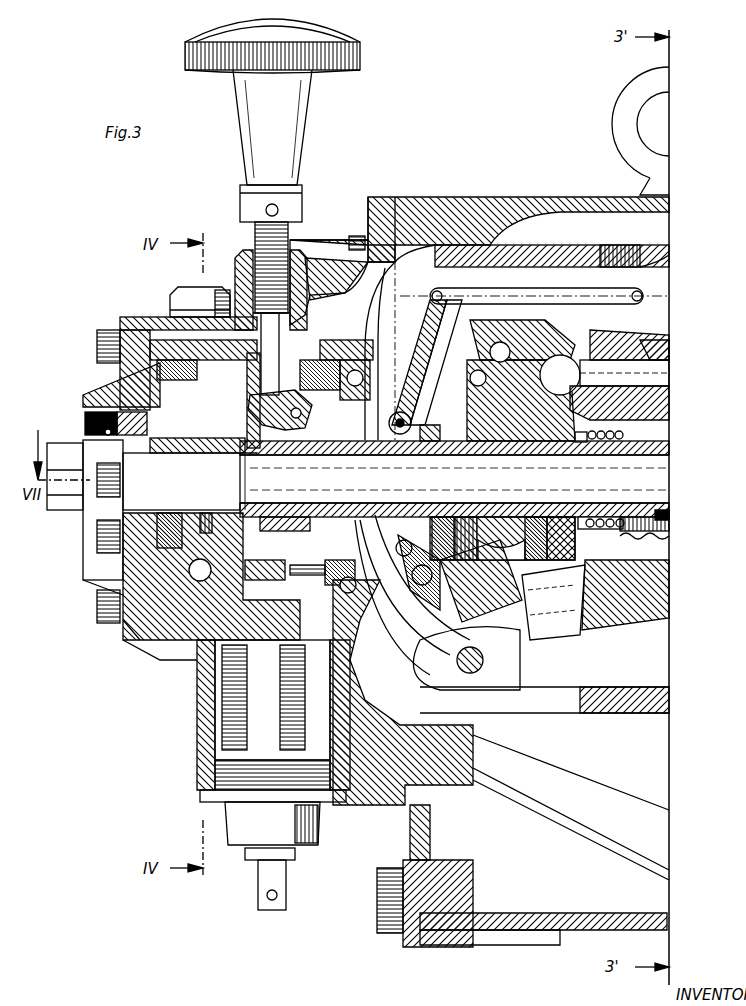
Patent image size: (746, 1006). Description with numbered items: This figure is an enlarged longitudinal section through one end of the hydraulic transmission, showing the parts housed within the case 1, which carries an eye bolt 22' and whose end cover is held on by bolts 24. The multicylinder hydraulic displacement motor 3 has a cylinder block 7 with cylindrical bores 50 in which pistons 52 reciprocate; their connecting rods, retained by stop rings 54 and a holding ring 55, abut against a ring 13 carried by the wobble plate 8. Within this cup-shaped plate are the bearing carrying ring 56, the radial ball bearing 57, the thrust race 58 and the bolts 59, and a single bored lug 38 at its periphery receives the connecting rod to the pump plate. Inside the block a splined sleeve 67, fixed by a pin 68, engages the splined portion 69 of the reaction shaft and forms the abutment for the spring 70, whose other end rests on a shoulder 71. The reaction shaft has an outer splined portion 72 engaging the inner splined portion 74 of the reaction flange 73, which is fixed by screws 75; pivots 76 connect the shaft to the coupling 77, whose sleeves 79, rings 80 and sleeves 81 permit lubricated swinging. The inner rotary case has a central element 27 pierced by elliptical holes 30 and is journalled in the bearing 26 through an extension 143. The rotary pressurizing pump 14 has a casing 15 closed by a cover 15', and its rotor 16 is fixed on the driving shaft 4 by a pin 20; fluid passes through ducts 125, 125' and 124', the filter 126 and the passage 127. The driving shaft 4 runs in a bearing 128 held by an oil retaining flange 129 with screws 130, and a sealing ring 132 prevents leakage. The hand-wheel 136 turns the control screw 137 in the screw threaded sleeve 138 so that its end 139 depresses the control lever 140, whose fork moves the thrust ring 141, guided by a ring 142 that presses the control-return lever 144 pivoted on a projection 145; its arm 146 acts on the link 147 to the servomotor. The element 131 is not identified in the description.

The case 1 is at (472, 196).
The multicylinder hydraulic displacement motor 3 is at (613, 360).
The driving shaft 4 is at (188, 491).
The cylinder block 7 is at (645, 618).
The wobble plate 8 is at (425, 610).
The ring 13 is at (459, 578).
The rotary pressurizing pump 14 is at (123, 620).
The casing 15 is at (181, 715).
The cover 15' is at (110, 385).
The rotor 16 is at (262, 503).
The pin 20 is at (212, 513).
The eye bolt 22' is at (626, 131).
The bolts 24 is at (350, 236).
The bearing 26 is at (352, 360).
The central element 27 is at (530, 245).
The elliptical holes 30 is at (622, 245).
The bored lug 38 is at (385, 690).
The cylindrical bores 50 is at (632, 350).
The pistons 52 is at (655, 400).
The stop rings 54 is at (665, 340).
The holding ring 55 is at (568, 360).
The bearing carrying ring 56 is at (515, 370).
The radial ball bearing 57 is at (470, 360).
The thrust race 58 is at (385, 640).
The bolts 59 is at (520, 610).
The splined sleeve 67 is at (616, 440).
The pin 68 is at (660, 545).
The splined portion 69 is at (678, 502).
The spring 70 is at (600, 528).
The shoulder 71 is at (580, 442).
The splined portion 72 is at (380, 420).
The reaction flange 73 is at (250, 395).
The inner splined portion 74 is at (315, 565).
The screws 75 is at (312, 365).
The pivots 76 is at (508, 539).
The coupling 77 is at (553, 517).
The sleeves 79 is at (470, 517).
The rings 80 is at (528, 530).
The sleeves 81 is at (540, 517).
The duct 124' is at (252, 715).
The duct 125 is at (190, 367).
The duct 125' is at (100, 665).
The filter 126 is at (318, 797).
The passage 127 is at (275, 520).
The bearing 128 is at (95, 583).
The oil retaining flange 129 is at (103, 345).
The screws 130 is at (105, 535).
The housing 131 is at (150, 655).
The sealing ring 132 is at (95, 425).
The hand-wheel 136 is at (358, 52).
The control screw 137 is at (245, 222).
The screw threaded sleeve 138 is at (242, 250).
The end 139 is at (261, 372).
The control lever 140 is at (245, 440).
The thrust ring 141 is at (348, 487).
The ring 142 is at (292, 575).
The extension 143 is at (330, 560).
The control-return lever 144 is at (430, 441).
The projection 145 is at (430, 330).
The arm 146 is at (440, 320).
The link 147 is at (563, 288).